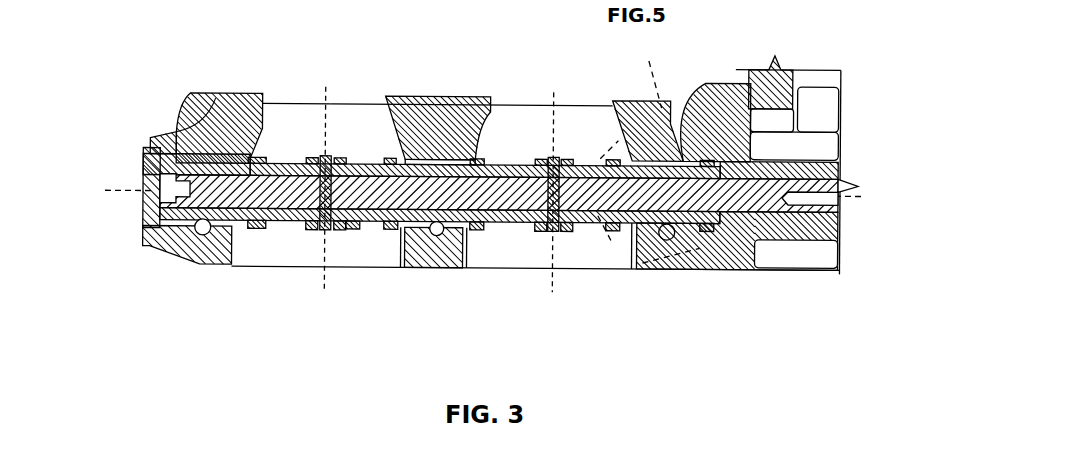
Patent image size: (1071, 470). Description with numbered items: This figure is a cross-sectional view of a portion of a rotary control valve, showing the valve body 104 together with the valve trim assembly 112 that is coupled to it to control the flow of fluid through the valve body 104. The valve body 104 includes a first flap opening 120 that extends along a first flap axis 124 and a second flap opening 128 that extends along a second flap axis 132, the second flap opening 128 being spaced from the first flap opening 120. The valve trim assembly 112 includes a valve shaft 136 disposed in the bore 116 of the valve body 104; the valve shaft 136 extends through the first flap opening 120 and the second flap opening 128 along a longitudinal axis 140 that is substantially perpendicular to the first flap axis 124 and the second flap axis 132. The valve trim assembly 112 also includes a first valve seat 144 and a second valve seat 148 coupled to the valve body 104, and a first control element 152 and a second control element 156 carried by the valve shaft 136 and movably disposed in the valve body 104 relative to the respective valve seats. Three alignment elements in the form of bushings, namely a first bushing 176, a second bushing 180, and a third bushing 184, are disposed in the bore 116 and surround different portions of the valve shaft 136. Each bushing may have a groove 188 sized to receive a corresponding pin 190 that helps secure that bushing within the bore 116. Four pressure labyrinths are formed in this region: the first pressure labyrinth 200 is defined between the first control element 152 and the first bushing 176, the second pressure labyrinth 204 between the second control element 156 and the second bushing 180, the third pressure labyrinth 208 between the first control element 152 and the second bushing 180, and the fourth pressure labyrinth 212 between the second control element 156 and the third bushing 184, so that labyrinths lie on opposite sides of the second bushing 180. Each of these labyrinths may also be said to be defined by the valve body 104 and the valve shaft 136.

The valve body 104 is at (243, 62).
The valve trim assembly 112 is at (170, 185).
The bore 116 is at (176, 140).
The first flap opening 120 is at (628, 240).
The first flap axis 124 is at (548, 100).
The second flap opening 128 is at (392, 230).
The second flap axis 132 is at (325, 272).
The valve shaft 136 is at (150, 205).
The longitudinal axis 140 is at (848, 202).
The first valve seat 144 is at (468, 240).
The second valve seat 148 is at (263, 240).
The first control element 152 is at (493, 145).
The second control element 156 is at (358, 227).
The first bushing 176 is at (690, 128).
The second bushing 180 is at (411, 100).
The third bushing 184 is at (195, 96).
The groove 188 is at (200, 232).
The pin 190 is at (218, 243).
The first pressure labyrinth 200 is at (622, 150).
The second pressure labyrinth 204 is at (398, 150).
The third pressure labyrinth 208 is at (478, 102).
The fourth pressure labyrinth 212 is at (258, 138).